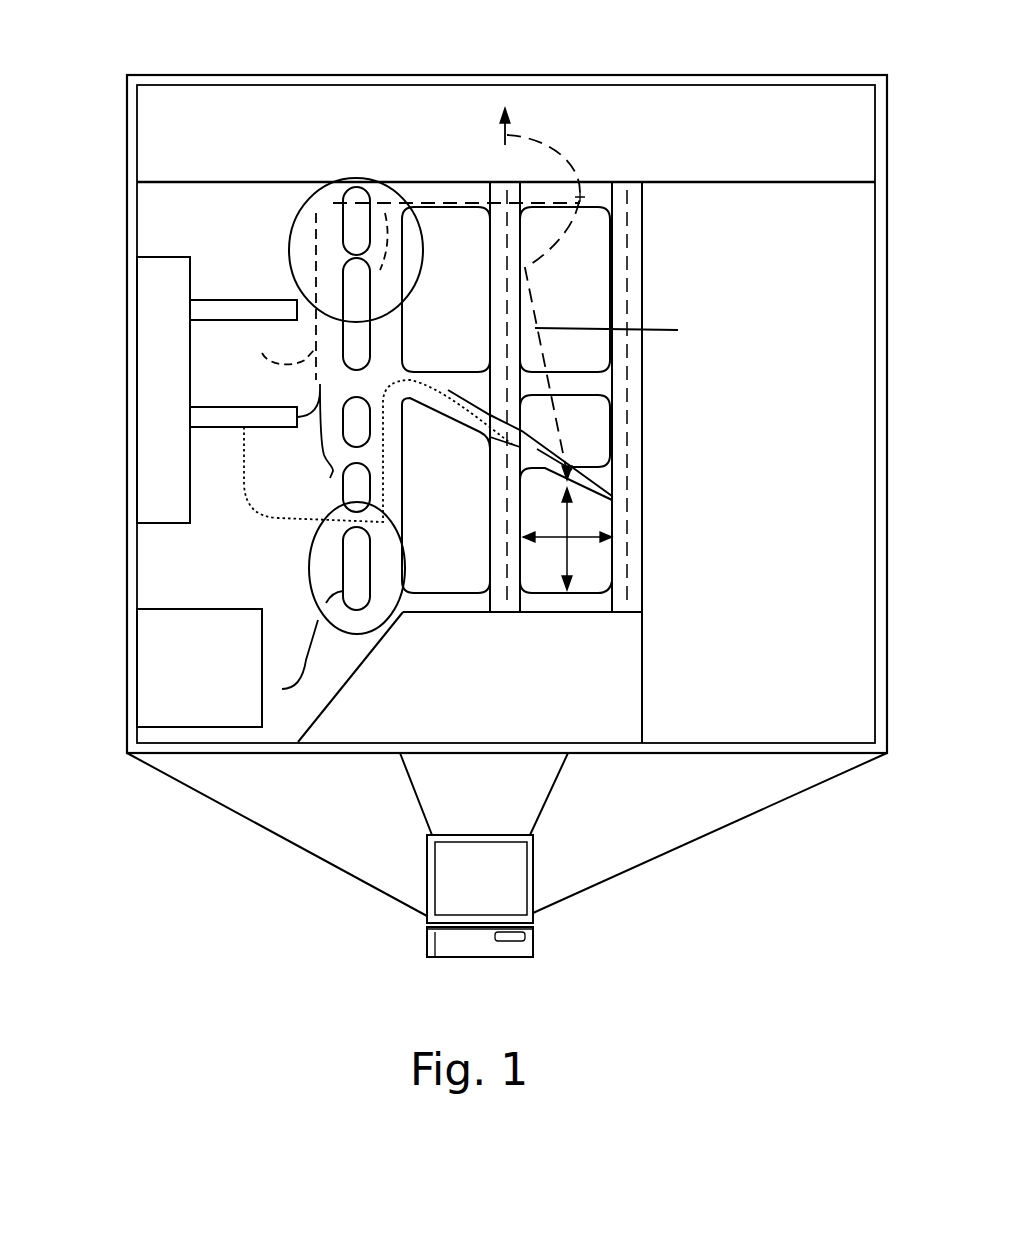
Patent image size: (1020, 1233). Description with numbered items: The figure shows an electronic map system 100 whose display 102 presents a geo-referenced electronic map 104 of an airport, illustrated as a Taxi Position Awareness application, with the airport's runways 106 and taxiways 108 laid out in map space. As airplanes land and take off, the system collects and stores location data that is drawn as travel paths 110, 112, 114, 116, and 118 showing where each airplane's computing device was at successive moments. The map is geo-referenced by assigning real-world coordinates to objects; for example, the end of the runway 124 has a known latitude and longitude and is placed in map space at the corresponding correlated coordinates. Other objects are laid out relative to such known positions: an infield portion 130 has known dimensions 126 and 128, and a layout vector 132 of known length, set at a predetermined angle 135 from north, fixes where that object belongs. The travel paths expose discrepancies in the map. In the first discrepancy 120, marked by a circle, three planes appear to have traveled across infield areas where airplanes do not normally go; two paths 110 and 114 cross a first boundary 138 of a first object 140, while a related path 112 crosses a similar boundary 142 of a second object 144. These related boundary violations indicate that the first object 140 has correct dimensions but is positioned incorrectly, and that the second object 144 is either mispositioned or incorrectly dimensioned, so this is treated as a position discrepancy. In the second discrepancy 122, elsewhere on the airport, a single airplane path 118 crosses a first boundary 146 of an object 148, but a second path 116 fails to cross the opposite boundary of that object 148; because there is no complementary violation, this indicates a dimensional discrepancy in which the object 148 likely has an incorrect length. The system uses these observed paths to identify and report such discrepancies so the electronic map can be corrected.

The electronic map system 100 is at (427, 922).
The display 102 is at (127, 75).
The electronic map 104 is at (155, 147).
The runways 106 is at (643, 300).
The taxiways 108 is at (572, 382).
The path 110 is at (254, 339).
The path 112 is at (282, 383).
The path 114 is at (330, 475).
The path 116 is at (243, 463).
The path 118 is at (307, 662).
The discrepancy 120 is at (377, 182).
The second discrepancy 122 is at (310, 568).
The end of the runway 124 is at (505, 180).
The dimension 126 is at (567, 570).
The dimension 128 is at (612, 537).
The infield portion 130 is at (600, 502).
The layout vector 132 is at (678, 330).
The angle 135 is at (557, 150).
The first boundary 138 is at (343, 197).
The first object 140 is at (343, 220).
The boundary 142 is at (345, 273).
The second object 144 is at (353, 337).
The first boundary 146 is at (353, 603).
The object 148 is at (310, 590).